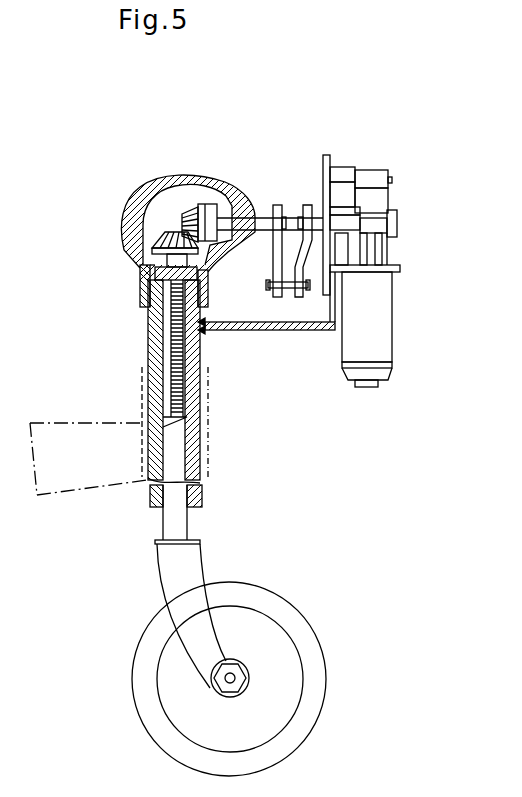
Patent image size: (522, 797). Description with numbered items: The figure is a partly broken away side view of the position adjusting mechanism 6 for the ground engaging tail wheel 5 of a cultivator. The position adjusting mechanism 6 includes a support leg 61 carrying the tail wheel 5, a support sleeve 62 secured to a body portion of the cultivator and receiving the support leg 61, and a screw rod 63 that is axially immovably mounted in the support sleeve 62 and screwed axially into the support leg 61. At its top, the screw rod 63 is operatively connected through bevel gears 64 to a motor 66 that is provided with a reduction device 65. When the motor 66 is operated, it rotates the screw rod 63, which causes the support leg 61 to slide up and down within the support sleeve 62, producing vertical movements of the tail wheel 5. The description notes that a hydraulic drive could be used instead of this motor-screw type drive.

The tail wheel 5 is at (315, 700).
The position adjusting mechanism 6 is at (271, 160).
The support leg 61 is at (162, 522).
The support sleeve 62 is at (148, 343).
The screw rod 63 is at (173, 313).
The bevel gears 64 is at (178, 228).
The reduction device 65 is at (370, 168).
The motor 66 is at (393, 327).